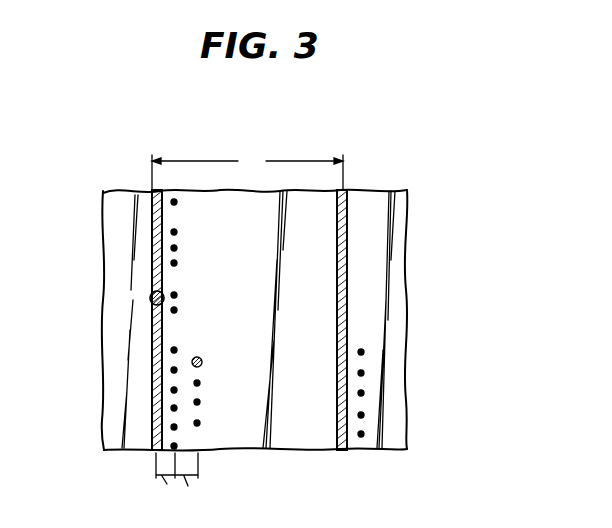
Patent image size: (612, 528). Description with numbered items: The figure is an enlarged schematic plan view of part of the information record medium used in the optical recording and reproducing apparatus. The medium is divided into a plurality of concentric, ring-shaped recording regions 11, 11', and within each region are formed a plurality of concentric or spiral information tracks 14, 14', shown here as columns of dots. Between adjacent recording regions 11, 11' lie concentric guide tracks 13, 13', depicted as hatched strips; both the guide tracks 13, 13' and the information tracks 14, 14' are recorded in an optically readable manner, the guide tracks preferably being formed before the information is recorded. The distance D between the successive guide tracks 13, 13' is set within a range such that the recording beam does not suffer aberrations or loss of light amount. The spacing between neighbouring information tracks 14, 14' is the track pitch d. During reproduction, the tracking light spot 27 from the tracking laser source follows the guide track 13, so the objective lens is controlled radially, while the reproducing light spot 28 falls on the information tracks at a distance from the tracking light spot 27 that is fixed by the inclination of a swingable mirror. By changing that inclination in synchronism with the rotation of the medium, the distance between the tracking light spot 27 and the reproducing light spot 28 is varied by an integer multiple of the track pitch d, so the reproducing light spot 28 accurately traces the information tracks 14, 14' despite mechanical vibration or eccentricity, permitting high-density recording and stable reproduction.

The recording region 11 is at (254, 342).
The recording region 11' is at (393, 342).
The guide track 13 is at (103, 320).
The guide track 13' is at (408, 320).
The information track 14 is at (113, 324).
The information track 14' is at (228, 436).
The tracking light spot 27 is at (151, 298).
The reproducing light spot 28 is at (192, 362).
The distance between successive guide tracks D is at (247, 169).
The track pitch d is at (173, 482).